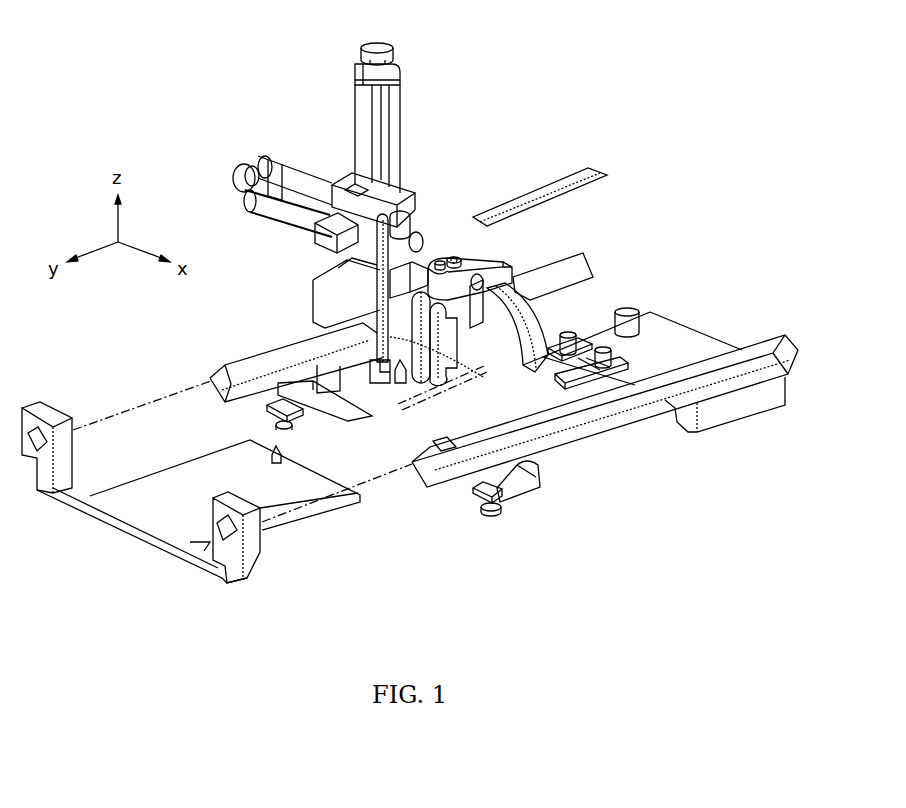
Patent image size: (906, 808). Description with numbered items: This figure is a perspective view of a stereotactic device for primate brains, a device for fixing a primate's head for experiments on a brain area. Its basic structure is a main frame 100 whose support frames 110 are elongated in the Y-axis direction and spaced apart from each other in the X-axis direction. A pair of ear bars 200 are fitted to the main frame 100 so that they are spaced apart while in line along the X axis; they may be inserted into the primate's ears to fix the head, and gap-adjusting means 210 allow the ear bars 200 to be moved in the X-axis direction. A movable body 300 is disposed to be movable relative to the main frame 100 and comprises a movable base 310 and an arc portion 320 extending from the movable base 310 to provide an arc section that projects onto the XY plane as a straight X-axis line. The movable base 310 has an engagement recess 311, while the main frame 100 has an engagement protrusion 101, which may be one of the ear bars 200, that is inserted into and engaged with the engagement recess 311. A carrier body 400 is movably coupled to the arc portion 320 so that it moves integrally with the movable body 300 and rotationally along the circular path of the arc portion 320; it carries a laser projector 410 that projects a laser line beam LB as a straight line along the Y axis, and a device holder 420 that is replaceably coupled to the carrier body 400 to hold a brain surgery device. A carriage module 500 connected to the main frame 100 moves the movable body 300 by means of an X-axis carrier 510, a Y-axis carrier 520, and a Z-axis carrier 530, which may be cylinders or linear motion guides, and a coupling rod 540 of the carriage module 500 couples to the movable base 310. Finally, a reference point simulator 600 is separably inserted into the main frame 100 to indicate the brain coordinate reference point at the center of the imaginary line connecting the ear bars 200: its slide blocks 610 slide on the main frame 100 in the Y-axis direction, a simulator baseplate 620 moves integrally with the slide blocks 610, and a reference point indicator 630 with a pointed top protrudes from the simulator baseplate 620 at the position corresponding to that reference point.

The main frame 100 is at (605, 412).
The support frames 110 is at (753, 356).
The ear bars 200 is at (296, 369).
The engagement protrusion 101 is at (330, 394).
The gap-adjusting means 210 is at (493, 513).
The movable body 300 is at (541, 439).
The movable base 310 is at (540, 378).
The arc portion 320 is at (440, 300).
The engagement recess 311 is at (398, 400).
The carrier body 400 is at (516, 224).
The laser projector 410 is at (440, 260).
The device holder 420 is at (474, 260).
The carriage module 500 is at (291, 202).
The X-axis carrier 510 is at (288, 168).
The Y-axis carrier 520 is at (373, 293).
The Z-axis carrier 530 is at (362, 137).
The coupling rod 540 is at (314, 300).
The reference point simulator 600 is at (217, 468).
The slide blocks 610 is at (48, 415).
The simulator baseplate 620 is at (161, 528).
The reference point indicator 630 is at (277, 464).
The laser line beam LB is at (405, 405).